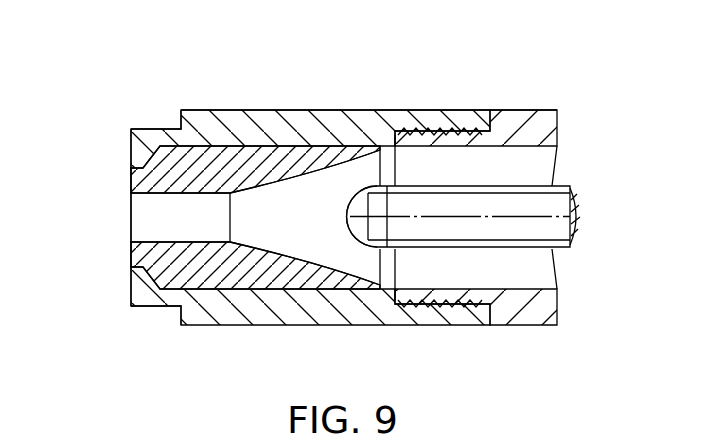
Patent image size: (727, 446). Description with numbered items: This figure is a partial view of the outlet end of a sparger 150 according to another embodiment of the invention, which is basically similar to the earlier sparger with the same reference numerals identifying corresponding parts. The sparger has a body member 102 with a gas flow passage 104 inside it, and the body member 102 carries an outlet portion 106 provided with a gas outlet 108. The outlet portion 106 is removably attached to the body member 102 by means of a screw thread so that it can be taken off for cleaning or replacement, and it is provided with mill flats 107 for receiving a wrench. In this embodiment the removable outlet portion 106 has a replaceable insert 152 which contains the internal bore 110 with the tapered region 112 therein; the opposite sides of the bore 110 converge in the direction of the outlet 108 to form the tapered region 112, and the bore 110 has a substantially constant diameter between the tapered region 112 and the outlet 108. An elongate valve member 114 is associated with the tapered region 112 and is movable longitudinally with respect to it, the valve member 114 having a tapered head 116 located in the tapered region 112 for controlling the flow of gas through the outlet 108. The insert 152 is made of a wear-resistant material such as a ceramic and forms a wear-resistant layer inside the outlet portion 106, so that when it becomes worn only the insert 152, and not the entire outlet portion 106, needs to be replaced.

The body member 102 is at (512, 120).
The gas flow passage 104 is at (524, 267).
The outlet portion 106 is at (234, 110).
The mill flats 107 is at (142, 128).
The gas outlet 108 is at (107, 231).
The internal bore 110 is at (150, 203).
The tapered region 112 is at (323, 183).
The valve member 114 is at (456, 226).
The tapered head 116 is at (356, 232).
The sparger 150 is at (274, 68).
The replaceable insert 152 is at (201, 270).